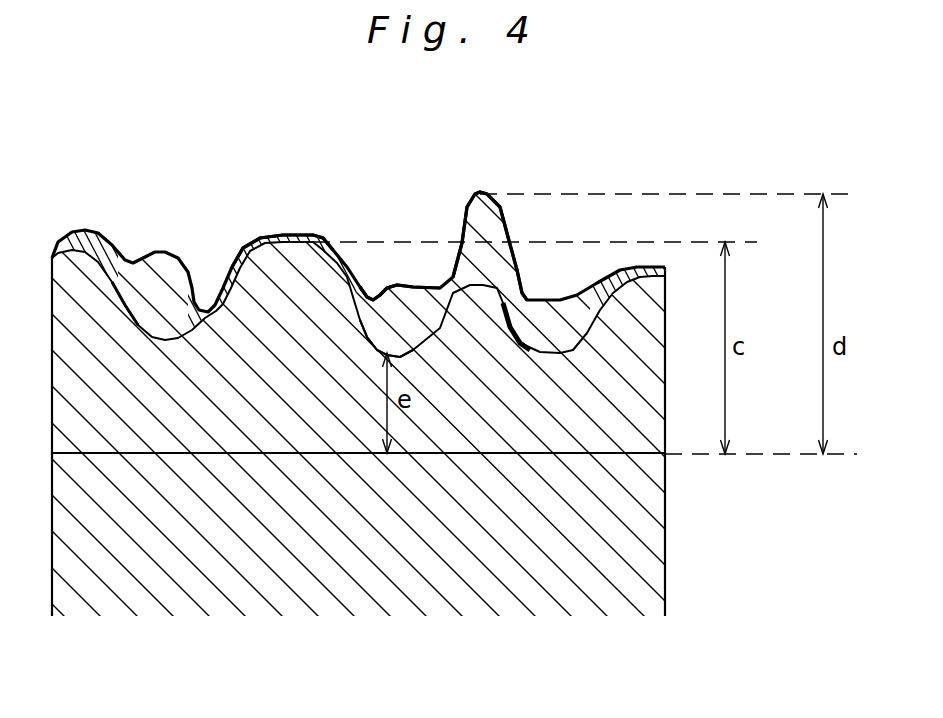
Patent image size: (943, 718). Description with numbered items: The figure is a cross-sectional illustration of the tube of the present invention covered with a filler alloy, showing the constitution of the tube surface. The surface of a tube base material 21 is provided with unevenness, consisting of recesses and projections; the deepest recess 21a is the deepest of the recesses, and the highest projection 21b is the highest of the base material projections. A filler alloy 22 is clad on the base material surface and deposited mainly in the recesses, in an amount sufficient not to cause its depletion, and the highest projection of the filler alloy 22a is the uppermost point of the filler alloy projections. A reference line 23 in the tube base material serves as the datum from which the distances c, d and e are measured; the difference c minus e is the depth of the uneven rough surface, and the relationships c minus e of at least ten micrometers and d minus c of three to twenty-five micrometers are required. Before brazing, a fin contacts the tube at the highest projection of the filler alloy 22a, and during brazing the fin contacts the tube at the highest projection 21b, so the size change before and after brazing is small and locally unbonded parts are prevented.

The surface of a tube base material 21 is at (208, 302).
The deepest recess 21a is at (387, 352).
The highest projection of the base material 21b is at (283, 235).
The filler alloy 22 is at (382, 290).
The highest projection of the filler alloy 22a is at (480, 193).
The reference line 23 is at (573, 455).